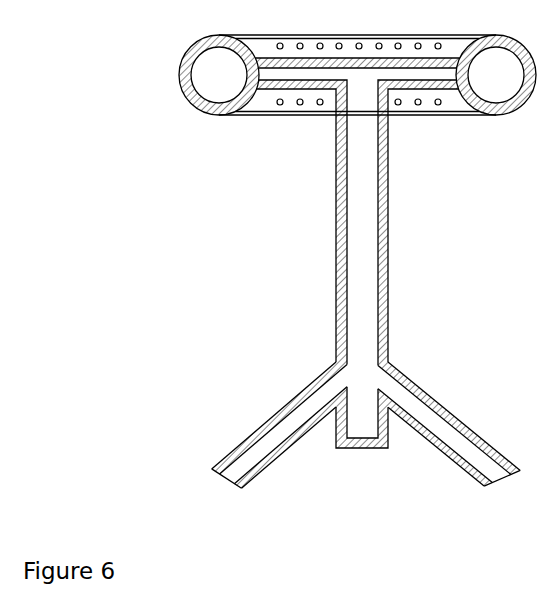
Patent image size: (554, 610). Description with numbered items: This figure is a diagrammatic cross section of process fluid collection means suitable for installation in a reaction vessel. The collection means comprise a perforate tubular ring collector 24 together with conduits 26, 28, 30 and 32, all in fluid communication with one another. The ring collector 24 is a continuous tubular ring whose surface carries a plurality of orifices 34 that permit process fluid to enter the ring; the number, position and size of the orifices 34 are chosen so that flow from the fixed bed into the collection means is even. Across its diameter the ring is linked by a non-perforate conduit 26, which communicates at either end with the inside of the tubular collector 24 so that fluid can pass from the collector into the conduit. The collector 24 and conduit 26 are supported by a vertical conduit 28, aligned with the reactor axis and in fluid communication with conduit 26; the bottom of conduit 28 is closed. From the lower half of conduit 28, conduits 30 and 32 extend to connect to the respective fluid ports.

The perforate tubular ring collector 24 is at (180, 74).
The non-perforate conduit 26 is at (305, 72).
The vertical conduit 28 is at (348, 269).
The conduit 30 is at (290, 421).
The conduit 32 is at (440, 408).
The orifices 34 is at (188, 100).